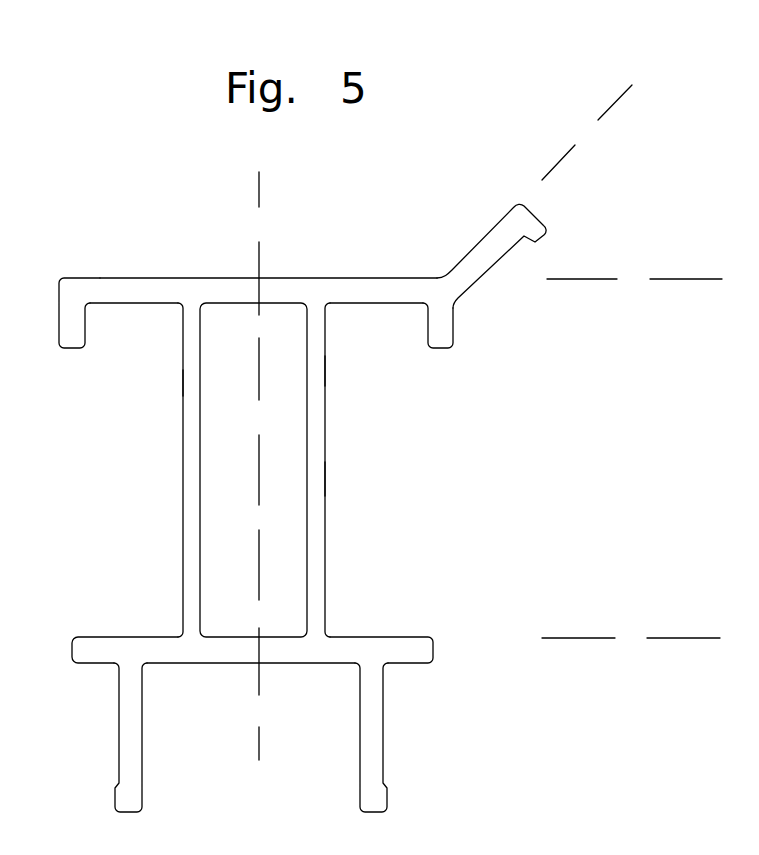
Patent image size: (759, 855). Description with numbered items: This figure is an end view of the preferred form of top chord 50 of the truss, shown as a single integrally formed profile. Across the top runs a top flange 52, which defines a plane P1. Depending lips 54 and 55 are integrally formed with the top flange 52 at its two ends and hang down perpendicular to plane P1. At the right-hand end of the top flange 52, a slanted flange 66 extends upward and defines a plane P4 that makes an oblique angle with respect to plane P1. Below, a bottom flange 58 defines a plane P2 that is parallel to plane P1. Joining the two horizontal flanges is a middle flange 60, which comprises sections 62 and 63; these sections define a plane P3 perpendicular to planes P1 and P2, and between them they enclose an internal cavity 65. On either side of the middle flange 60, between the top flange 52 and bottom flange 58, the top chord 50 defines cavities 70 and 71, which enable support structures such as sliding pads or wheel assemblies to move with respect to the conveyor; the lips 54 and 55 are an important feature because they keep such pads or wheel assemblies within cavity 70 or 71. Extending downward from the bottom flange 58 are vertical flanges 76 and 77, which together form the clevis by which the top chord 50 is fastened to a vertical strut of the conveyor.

The top chord 50 is at (316, 277).
The top flange 52 is at (158, 277).
The depending lip 54 is at (451, 349).
The depending lip 55 is at (85, 342).
The bottom flange 58 is at (415, 637).
The middle flange 60 is at (327, 478).
The section of middle flange 62 is at (325, 539).
The section of middle flange 63 is at (182, 585).
The internal cavity 65 is at (225, 333).
The slanted flange 66 is at (538, 218).
The cavity 70 is at (357, 370).
The cavity 71 is at (154, 386).
The vertical flange 76 is at (383, 765).
The vertical flange 77 is at (121, 735).
The plane P1 is at (607, 279).
The plane P2 is at (570, 638).
The plane P3 is at (261, 733).
The plane P4 is at (607, 112).